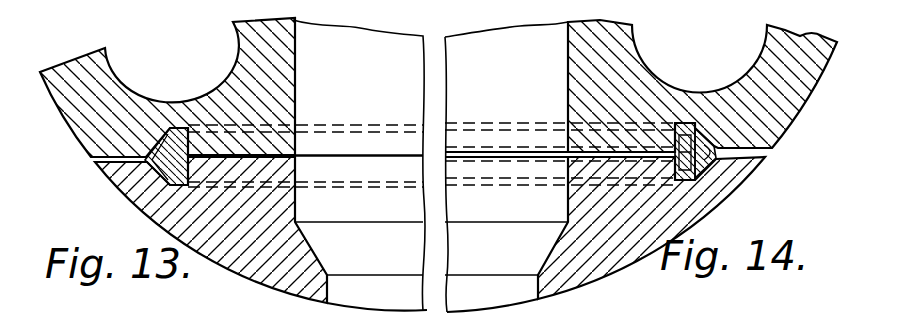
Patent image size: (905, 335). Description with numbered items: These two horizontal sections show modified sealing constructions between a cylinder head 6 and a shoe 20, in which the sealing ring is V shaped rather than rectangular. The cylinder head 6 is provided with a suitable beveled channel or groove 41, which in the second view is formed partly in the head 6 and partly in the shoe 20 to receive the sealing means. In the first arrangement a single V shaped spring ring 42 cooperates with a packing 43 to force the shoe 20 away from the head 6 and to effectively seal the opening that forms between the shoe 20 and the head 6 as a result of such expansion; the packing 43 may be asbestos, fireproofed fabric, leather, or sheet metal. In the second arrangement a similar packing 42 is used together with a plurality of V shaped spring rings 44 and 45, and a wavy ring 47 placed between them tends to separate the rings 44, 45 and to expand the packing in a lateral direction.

In FIG. 13, the cylinder head 6 is at (123, 105).
In FIG. 14, the cylinder head 6 is at (762, 68).
In FIG. 13, the shoe 20 is at (243, 252).
In FIG. 13, the beveled channel or groove 41 is at (175, 126).
In FIG. 14, the beveled channel or groove 41 is at (692, 125).
In FIG. 13, the V shaped spring ring 42 is at (162, 169).
In FIG. 14, the V shaped spring ring 42 is at (727, 143).
In FIG. 13, the packing 43 is at (143, 158).
In FIG. 14, the spring ring 44 is at (703, 165).
In FIG. 14, the spring ring 45 is at (690, 128).
In FIG. 14, the wavy ring 47 is at (720, 163).